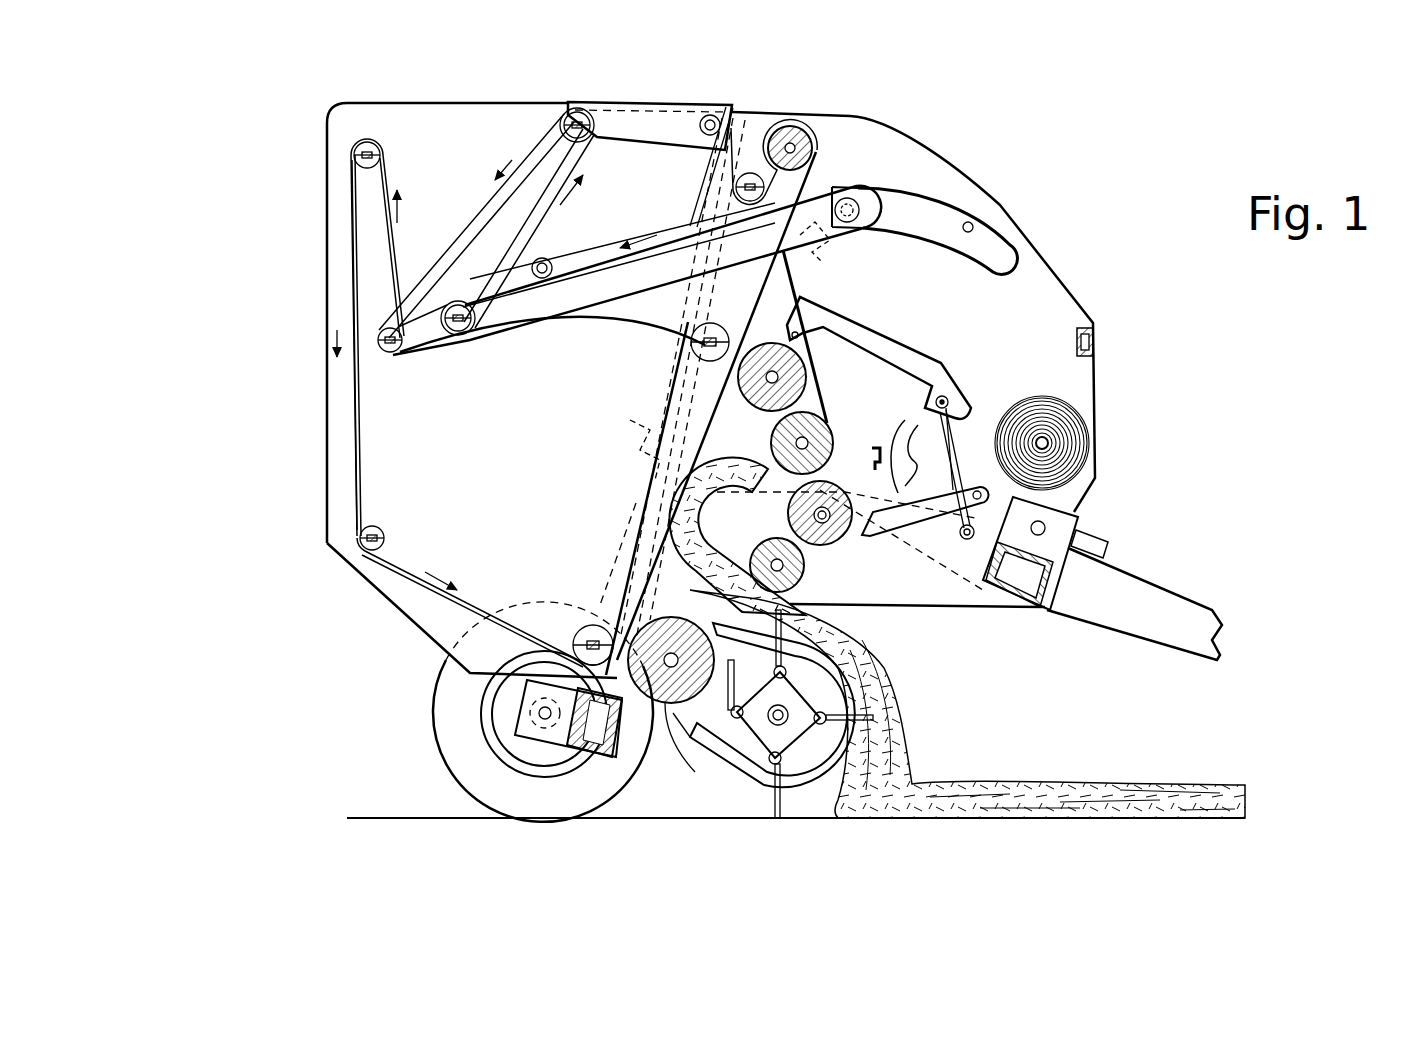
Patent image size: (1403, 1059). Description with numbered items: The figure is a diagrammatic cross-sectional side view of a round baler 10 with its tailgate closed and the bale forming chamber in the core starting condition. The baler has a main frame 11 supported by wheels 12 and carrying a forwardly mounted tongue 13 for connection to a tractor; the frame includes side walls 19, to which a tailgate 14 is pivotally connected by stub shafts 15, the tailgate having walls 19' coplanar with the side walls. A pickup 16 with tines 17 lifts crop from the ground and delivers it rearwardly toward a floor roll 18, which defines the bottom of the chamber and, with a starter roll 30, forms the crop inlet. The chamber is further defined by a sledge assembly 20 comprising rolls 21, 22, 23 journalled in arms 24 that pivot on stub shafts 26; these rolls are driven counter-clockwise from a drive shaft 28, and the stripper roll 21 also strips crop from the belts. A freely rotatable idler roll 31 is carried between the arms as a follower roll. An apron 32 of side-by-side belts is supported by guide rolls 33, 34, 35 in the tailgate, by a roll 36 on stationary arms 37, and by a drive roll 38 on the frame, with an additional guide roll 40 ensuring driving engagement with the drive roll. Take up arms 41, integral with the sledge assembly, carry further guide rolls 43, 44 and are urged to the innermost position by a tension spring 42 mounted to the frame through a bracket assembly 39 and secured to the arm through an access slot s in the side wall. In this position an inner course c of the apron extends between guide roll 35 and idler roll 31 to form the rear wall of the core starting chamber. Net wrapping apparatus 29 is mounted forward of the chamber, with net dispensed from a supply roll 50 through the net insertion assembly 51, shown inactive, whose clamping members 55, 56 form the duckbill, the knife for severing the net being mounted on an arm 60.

The round baler 10 is at (1033, 125).
The main frame 11 is at (600, 580).
The wheels 12 is at (440, 713).
The tongue 13 is at (1150, 603).
The tailgate 14 is at (405, 100).
The stub shafts 15 is at (708, 115).
The pickup 16 is at (830, 688).
The tines 17 is at (870, 696).
The floor roll 18 is at (700, 772).
The side walls 19 is at (800, 406).
The walls 19' is at (603, 498).
The sledge assembly 20 is at (835, 392).
The roll 21 is at (792, 373).
The roll 22 is at (822, 432).
The roll 23 is at (865, 527).
The arms 24 is at (802, 292).
The stub shafts 26 is at (810, 560).
The drive shaft 28 is at (1100, 540).
The net wrapping apparatus 29 is at (995, 392).
The starter roll 30 is at (760, 540).
The idler roll 31 is at (720, 325).
The apron 32 is at (362, 443).
The guide roll 33 is at (355, 148).
The guide roll 34 is at (370, 552).
The guide roll 35 is at (588, 624).
The roll 36 is at (577, 108).
The stationary arms 37 is at (640, 118).
The drive roll 38 is at (800, 133).
The bracket assembly 39 is at (630, 455).
The guide roll 40 is at (750, 172).
The take up arms 41 is at (562, 268).
The tension spring 42 is at (822, 245).
The guide roll 43 is at (376, 350).
The guide roll 44 is at (462, 337).
The supply roll 50 is at (1070, 445).
The net insertion assembly 51 is at (868, 336).
The clamping member 55 is at (905, 400).
The clamping member 56 is at (912, 425).
The arm 60 is at (960, 540).
The access slot s is at (972, 229).
The inner course c is at (665, 505).